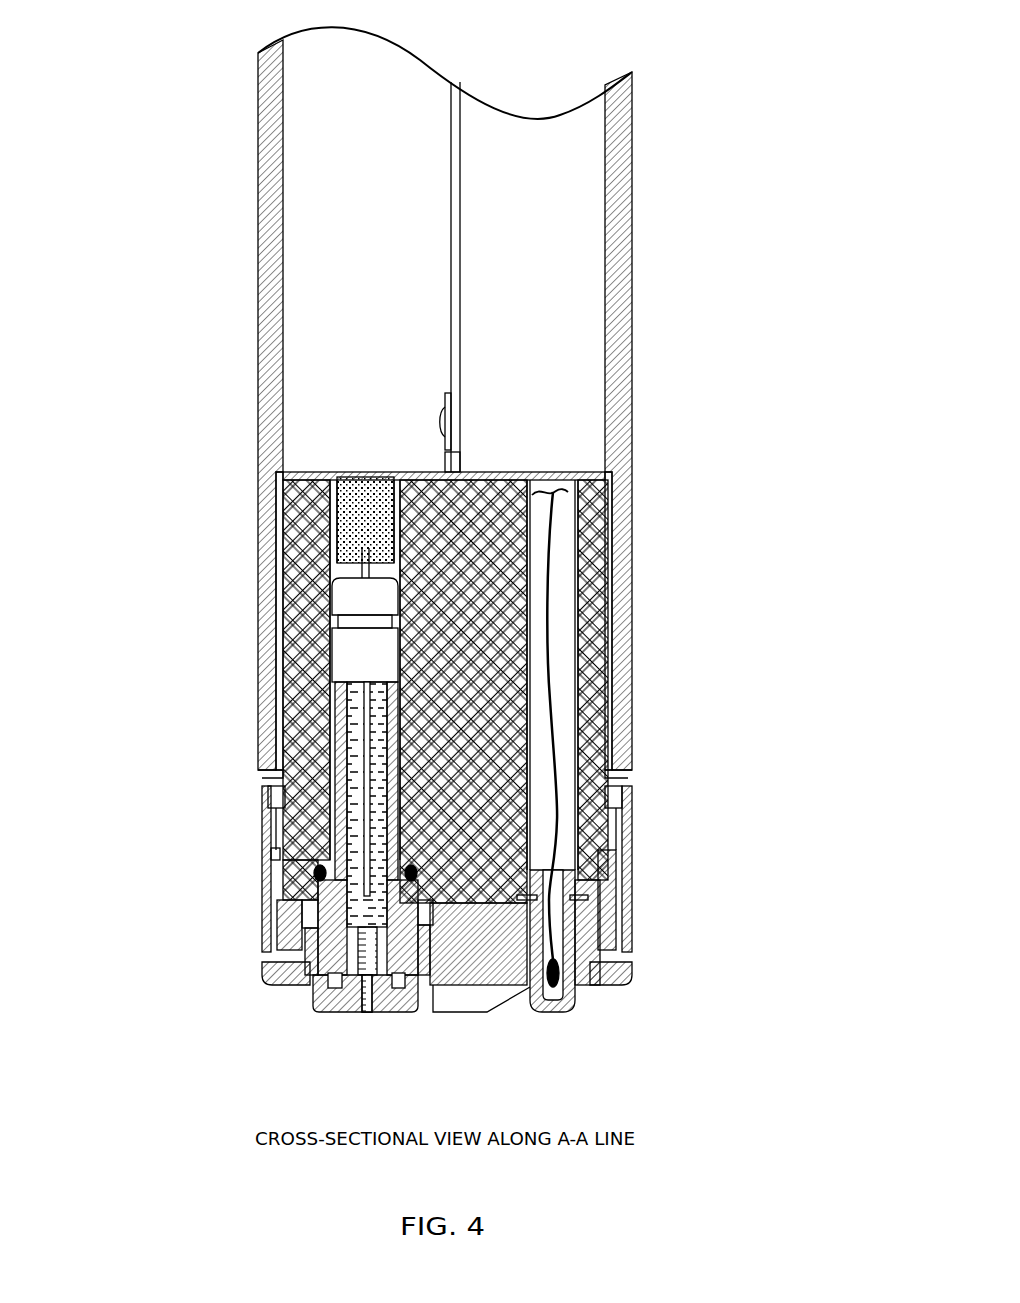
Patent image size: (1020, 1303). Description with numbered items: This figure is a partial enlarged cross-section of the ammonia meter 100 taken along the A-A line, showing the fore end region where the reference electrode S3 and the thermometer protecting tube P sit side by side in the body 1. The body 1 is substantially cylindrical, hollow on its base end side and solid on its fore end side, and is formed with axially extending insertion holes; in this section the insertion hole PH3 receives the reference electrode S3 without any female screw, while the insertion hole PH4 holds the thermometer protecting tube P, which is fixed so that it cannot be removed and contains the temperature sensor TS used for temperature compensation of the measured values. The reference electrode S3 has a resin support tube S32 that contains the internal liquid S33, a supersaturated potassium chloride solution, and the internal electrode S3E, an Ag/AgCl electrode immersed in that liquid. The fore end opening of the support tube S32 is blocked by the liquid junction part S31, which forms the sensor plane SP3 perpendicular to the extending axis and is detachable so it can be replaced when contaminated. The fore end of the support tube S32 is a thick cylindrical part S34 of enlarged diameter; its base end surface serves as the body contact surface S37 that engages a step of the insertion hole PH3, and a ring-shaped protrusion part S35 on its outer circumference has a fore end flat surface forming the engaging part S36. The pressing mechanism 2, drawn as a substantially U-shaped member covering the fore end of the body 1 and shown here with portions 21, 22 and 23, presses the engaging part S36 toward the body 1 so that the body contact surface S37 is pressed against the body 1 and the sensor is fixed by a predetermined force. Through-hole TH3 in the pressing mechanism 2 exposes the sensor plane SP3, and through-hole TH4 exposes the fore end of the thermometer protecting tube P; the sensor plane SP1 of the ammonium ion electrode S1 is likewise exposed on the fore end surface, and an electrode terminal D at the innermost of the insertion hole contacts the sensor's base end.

The ammonia meter 100 is at (178, 168).
The body 1 is at (633, 648).
The pressing mechanism 2 is at (247, 997).
The base body 21 is at (438, 1012).
The side wall 22 is at (262, 930).
The engaging projection 23 is at (262, 838).
The desiccant D is at (395, 522).
The insertion hole PH3 is at (323, 604).
The insertion hole PH4 is at (590, 733).
The ammonium ion electrode S1 is at (490, 1022).
The reference electrode S3 is at (332, 1025).
The liquid junction part S31 is at (366, 1012).
The support tube S32 is at (330, 692).
The internal liquid S33 is at (345, 760).
The thick cylindrical part S34 is at (300, 893).
The protrusion part S35 is at (262, 953).
The engaging part S36 is at (306, 985).
The body contact surface S37 is at (300, 866).
The internal electrode S3E is at (314, 876).
The sensor plane SP1 is at (512, 997).
The sensor plane SP3 is at (388, 1012).
The through-hole TH3 is at (428, 915).
The through-hole TH4 is at (590, 918).
The temperature sensor TS is at (598, 980).
The thermometer protecting tube P is at (575, 1000).